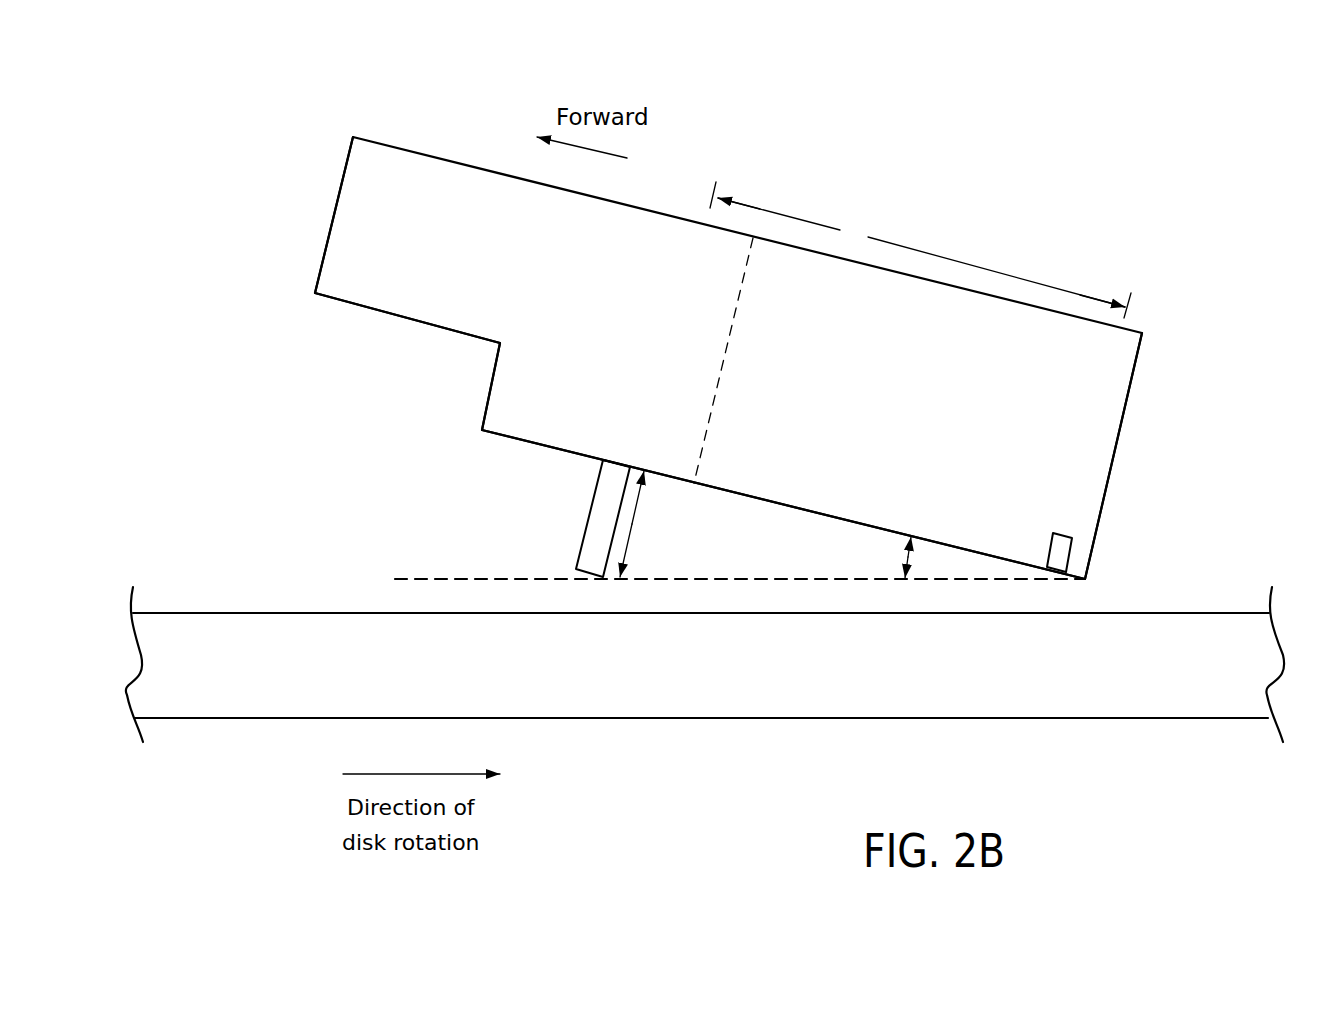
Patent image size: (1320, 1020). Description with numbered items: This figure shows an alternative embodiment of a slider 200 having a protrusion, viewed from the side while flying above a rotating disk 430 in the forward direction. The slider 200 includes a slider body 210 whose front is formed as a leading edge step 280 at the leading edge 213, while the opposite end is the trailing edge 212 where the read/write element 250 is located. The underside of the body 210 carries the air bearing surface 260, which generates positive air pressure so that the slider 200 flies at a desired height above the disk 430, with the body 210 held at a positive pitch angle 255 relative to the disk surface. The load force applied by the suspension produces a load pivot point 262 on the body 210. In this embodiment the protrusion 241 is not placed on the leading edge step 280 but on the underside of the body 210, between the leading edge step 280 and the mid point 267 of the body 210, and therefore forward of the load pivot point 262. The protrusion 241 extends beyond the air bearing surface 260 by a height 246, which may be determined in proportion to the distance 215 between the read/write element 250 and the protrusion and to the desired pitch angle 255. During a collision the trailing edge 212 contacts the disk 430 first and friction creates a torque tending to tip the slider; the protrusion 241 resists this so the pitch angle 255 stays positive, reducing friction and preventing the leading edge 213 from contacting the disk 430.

The slider 200 is at (1135, 125).
The slider body 210 is at (1032, 394).
The trailing edge 212 is at (1150, 322).
The leading edge 213 is at (357, 127).
The distance (L) 215 is at (1040, 278).
The protrusion 241 is at (588, 518).
The height of the protrusion 246 is at (637, 517).
The read/write element 250 is at (1058, 545).
The pitch angle (a) 255 is at (740, 558).
The air bearing surface 260 is at (510, 442).
The load pivot point 262 is at (843, 258).
The mid point 267 is at (722, 375).
The leading edge step 280 is at (402, 343).
The disk 430 is at (718, 694).